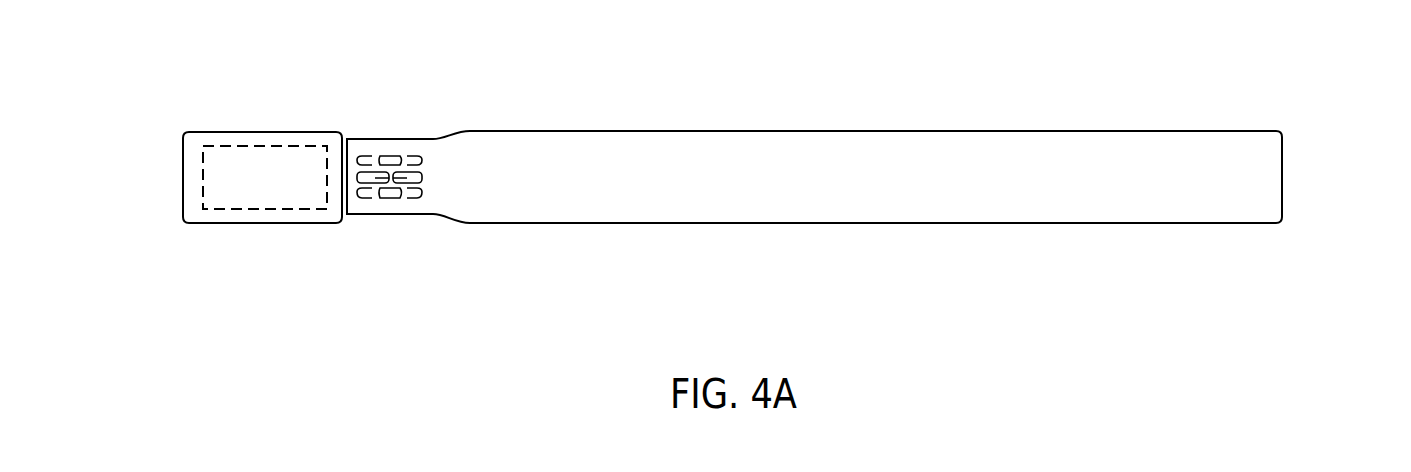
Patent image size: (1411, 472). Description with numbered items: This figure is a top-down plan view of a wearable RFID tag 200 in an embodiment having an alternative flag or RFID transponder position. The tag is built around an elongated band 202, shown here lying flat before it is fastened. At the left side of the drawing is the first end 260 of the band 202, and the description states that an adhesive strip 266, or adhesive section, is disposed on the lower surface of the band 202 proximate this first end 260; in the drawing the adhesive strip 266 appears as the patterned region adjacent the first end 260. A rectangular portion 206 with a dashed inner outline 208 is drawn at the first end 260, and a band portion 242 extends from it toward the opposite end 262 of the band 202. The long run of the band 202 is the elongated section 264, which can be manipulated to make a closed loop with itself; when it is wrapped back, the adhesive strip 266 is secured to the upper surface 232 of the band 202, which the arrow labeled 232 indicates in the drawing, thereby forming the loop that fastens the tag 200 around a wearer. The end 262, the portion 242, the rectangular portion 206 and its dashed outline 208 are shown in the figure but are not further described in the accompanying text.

The RFID tag 200 is at (123, 89).
The band 202 is at (965, 155).
The housing 206 is at (196, 145).
The electronic module 208 is at (270, 160).
The upper surface 232 is at (671, 184).
The band strap portion 242 is at (574, 147).
The first end 260 is at (183, 172).
The second end 262 is at (1283, 173).
The elongated section 264 is at (833, 180).
The adhesive strip 266 is at (393, 198).